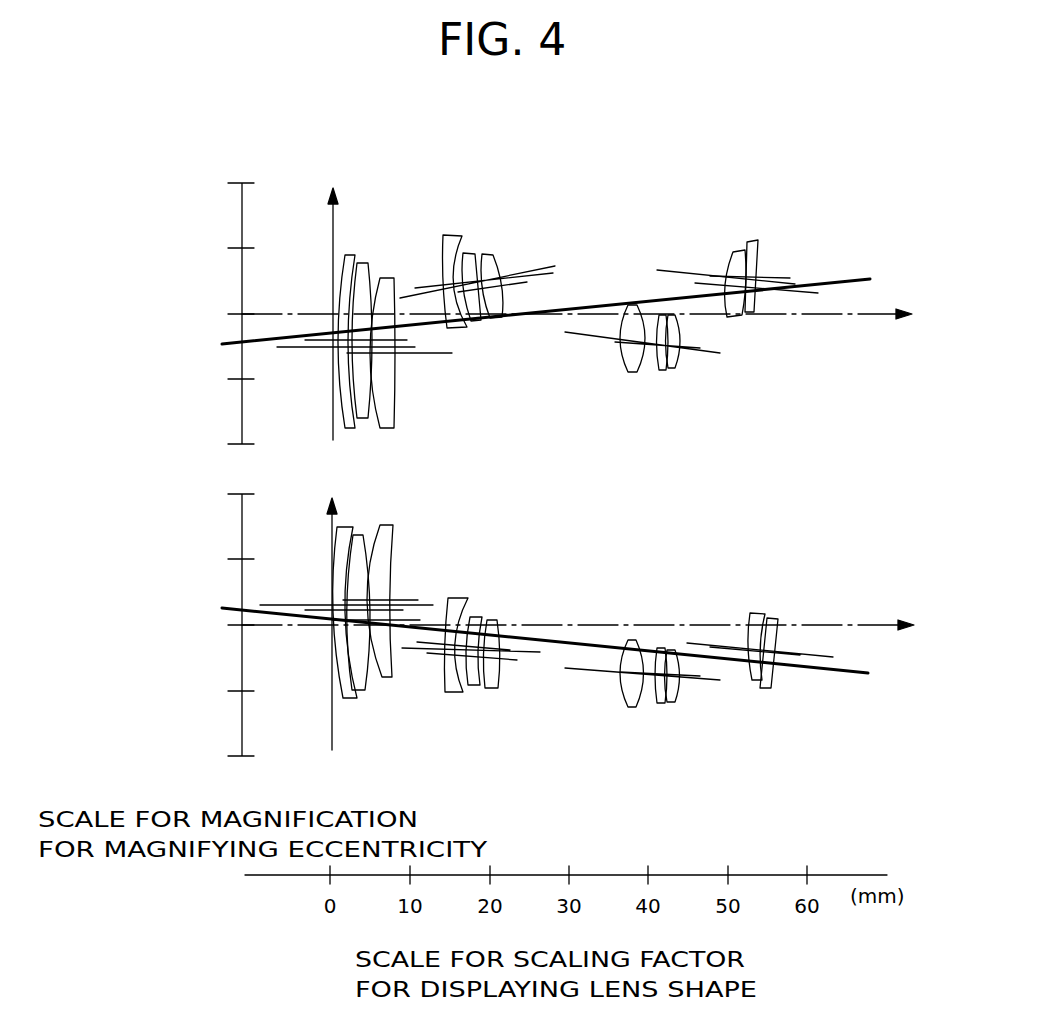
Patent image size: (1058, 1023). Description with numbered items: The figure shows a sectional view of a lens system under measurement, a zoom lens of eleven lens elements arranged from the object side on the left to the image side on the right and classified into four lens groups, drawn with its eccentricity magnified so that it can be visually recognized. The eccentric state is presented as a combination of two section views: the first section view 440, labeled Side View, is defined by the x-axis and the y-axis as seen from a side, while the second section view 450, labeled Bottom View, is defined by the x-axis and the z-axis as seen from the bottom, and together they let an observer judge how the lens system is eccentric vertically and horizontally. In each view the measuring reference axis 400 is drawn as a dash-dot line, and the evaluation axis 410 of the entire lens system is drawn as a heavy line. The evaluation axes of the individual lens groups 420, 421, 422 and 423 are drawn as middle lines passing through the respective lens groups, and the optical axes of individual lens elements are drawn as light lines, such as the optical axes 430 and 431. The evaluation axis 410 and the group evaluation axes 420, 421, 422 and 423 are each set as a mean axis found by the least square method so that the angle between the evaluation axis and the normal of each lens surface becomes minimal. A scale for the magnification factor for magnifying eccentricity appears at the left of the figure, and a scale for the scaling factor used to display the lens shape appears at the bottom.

The measuring reference axis 400 is at (822, 318).
The evaluation axis of the entire lens system 410 is at (845, 281).
The evaluation axis of the first lens group 420 is at (445, 355).
The evaluation axis of the second lens group 421 is at (535, 279).
The evaluation axis of the third lens group 422 is at (580, 335).
The evaluation axis of the fourth lens group 423 is at (678, 272).
The optical axis of a lens element 430 is at (742, 278).
The optical axis of a lens element 431 is at (707, 287).
The first section view 440 is at (140, 290).
The second section view 450 is at (140, 602).